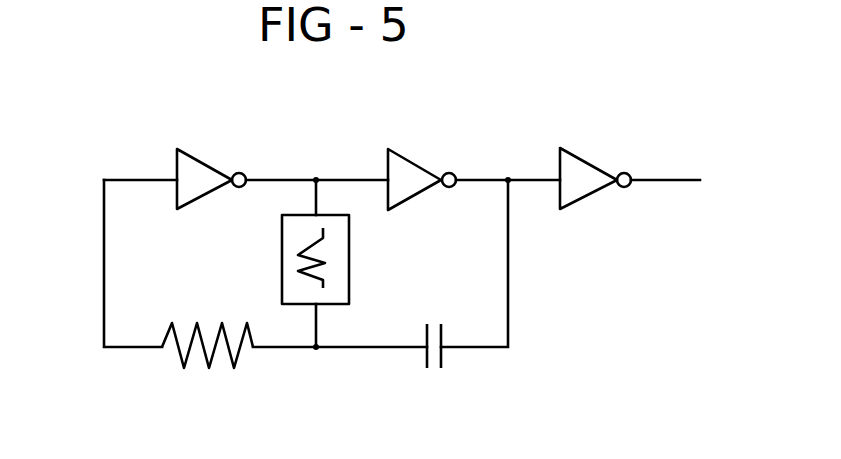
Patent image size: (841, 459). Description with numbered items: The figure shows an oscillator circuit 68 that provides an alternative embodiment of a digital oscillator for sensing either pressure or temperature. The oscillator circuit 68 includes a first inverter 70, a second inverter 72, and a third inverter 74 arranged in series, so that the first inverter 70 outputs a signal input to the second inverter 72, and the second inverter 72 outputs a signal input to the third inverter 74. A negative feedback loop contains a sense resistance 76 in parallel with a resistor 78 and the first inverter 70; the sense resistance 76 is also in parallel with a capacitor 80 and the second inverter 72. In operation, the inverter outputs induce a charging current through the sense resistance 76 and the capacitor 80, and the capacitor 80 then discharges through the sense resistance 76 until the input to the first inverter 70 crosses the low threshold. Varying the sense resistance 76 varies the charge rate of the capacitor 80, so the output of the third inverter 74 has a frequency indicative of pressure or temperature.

The oscillator circuit 68 is at (100, 147).
The first inverter 70 is at (206, 160).
The second inverter 72 is at (414, 159).
The third inverter 74 is at (590, 160).
The sense resistance 76 is at (349, 252).
The resistor 78 is at (200, 362).
The capacitor 80 is at (444, 358).